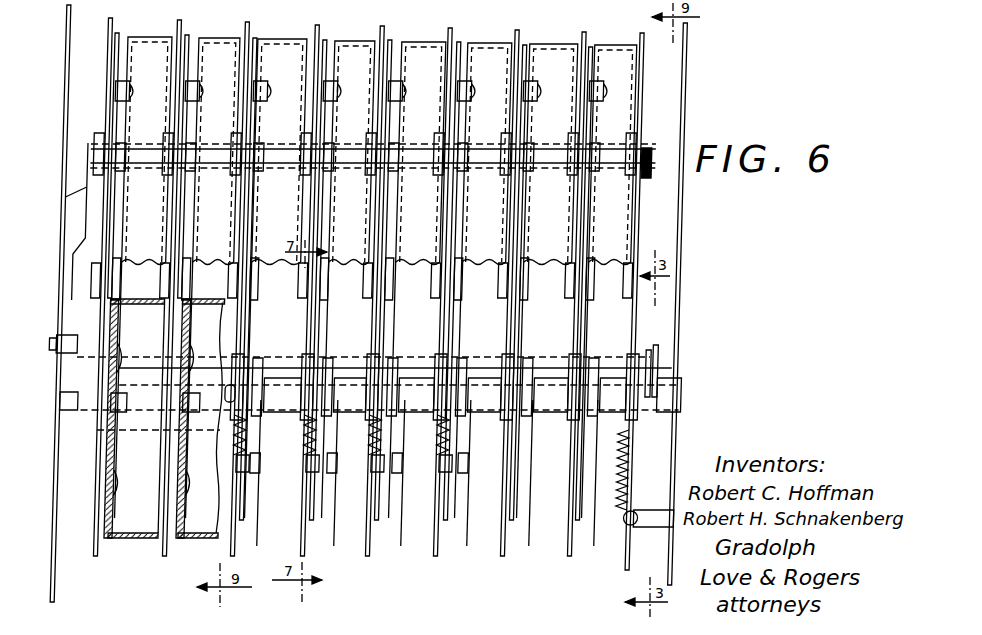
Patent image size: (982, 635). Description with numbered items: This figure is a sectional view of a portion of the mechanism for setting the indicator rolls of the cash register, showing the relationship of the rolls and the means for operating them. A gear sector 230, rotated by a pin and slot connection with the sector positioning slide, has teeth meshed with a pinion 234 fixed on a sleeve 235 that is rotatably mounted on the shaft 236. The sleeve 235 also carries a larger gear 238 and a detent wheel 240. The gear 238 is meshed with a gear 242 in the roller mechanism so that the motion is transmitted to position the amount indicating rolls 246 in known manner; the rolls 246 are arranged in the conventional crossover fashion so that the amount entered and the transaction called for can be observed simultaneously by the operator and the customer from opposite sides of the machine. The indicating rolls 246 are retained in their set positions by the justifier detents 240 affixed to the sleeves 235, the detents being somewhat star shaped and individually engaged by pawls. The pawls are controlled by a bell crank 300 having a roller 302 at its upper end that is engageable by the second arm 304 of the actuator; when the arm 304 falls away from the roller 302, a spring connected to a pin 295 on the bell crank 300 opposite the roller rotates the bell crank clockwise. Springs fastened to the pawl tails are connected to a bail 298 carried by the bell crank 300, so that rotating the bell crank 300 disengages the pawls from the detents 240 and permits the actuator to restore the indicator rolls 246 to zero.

The amount indicating rolls 246 is at (210, 38).
The gear 242 is at (108, 537).
The second arm 304 is at (68, 296).
The roller 302 is at (70, 336).
The bell crank 300 is at (73, 412).
The shaft 236 is at (228, 400).
The bail 298 is at (352, 372).
The pinion 234 is at (476, 372).
The sleeve 235 is at (553, 412).
The pin 295 is at (641, 440).
The larger gear 238 is at (389, 517).
The detent wheel 240 is at (458, 490).
The gear sector 230 is at (529, 528).